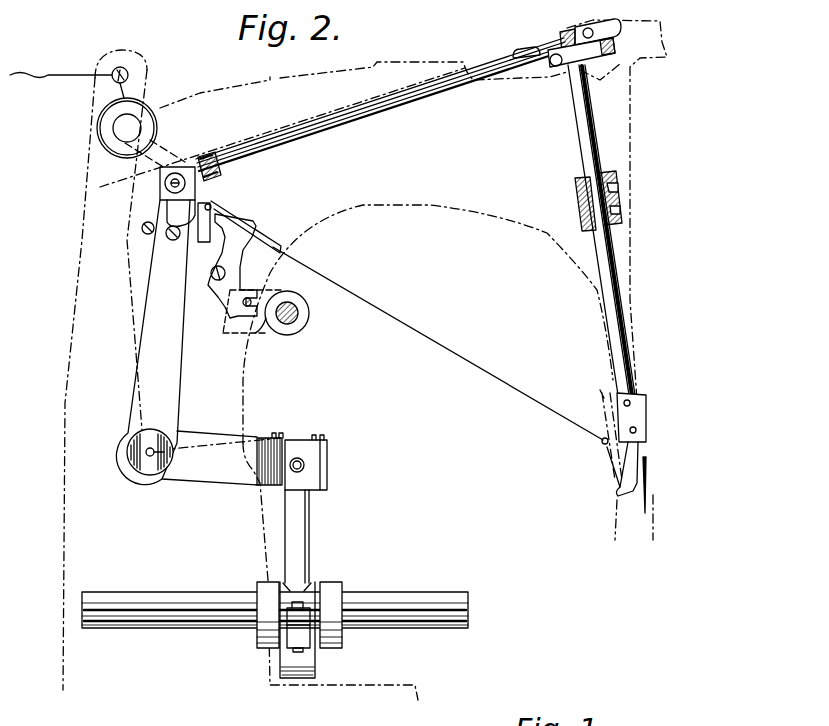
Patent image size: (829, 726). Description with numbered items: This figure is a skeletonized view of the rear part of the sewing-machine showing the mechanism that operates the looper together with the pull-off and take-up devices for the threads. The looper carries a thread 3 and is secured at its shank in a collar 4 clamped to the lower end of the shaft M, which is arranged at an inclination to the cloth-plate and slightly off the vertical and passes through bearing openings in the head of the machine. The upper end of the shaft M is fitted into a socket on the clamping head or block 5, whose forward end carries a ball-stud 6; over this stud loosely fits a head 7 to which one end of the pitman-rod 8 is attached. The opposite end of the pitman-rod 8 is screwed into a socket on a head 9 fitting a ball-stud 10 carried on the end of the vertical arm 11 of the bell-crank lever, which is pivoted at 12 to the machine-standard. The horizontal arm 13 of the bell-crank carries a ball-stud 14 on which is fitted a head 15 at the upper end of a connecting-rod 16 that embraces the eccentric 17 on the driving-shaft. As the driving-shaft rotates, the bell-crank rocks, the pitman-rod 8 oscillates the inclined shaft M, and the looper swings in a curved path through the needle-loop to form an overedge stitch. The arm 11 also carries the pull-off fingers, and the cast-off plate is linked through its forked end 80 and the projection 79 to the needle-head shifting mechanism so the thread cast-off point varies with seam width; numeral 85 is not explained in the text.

The thread 3 is at (271, 81).
The collar 4 is at (648, 411).
The clamping head or block 5 is at (605, 72).
The ball-stud 6 is at (661, 87).
The head 7 is at (589, 28).
The pitman-rod 8 is at (437, 94).
The head 9 is at (207, 189).
The ball-stud 10 is at (168, 186).
The vertical arm 11 is at (158, 313).
The pivot 12 is at (140, 462).
The horizontal arm 13 is at (208, 470).
The ball-stud 14 is at (300, 458).
The head 15 is at (305, 450).
The connecting-rod 16 is at (305, 525).
The eccentric 17 is at (290, 667).
The member 79 is at (249, 333).
The forked end 80 is at (227, 300).
The lever 85 is at (777, 715).
The shaft M is at (627, 322).